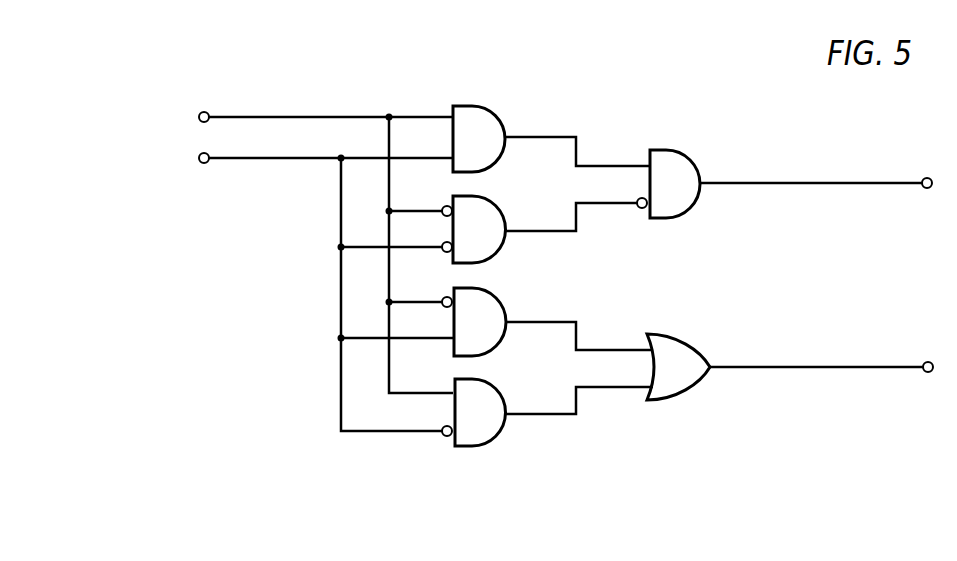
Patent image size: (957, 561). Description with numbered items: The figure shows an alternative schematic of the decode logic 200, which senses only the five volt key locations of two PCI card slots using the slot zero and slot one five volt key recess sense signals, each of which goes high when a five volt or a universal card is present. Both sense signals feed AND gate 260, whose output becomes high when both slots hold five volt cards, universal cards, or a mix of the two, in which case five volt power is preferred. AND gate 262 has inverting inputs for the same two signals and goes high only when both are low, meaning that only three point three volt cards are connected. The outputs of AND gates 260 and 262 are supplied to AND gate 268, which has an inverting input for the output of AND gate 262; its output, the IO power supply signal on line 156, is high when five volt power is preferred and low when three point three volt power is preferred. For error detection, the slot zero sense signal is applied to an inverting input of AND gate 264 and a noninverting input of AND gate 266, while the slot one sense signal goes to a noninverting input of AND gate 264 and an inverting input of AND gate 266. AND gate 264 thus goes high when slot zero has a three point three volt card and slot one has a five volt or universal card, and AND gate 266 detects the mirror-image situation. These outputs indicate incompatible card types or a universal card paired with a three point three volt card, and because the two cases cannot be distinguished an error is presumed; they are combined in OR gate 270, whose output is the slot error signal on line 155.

The slot power control logic circuit 200 is at (633, 104).
The AND gate 260 is at (493, 152).
The AND gate 262 is at (493, 241).
The AND gate 264 is at (495, 331).
The AND gate 266 is at (495, 421).
The AND gate 268 is at (692, 193).
The OR gate 270 is at (700, 377).
The IO_PWR_SUPPLY signal line 156 is at (764, 186).
The line 155 is at (764, 370).